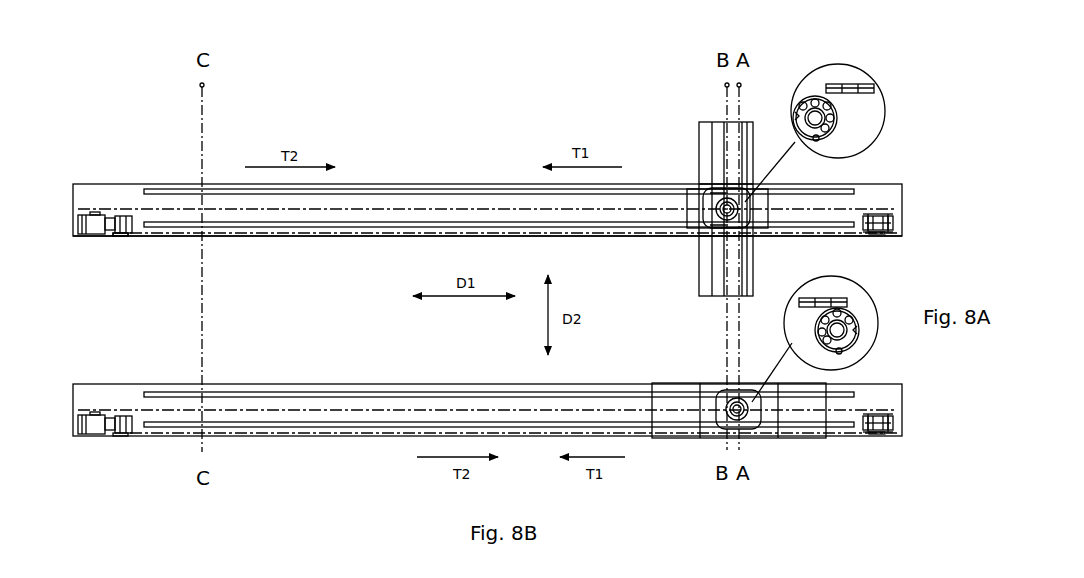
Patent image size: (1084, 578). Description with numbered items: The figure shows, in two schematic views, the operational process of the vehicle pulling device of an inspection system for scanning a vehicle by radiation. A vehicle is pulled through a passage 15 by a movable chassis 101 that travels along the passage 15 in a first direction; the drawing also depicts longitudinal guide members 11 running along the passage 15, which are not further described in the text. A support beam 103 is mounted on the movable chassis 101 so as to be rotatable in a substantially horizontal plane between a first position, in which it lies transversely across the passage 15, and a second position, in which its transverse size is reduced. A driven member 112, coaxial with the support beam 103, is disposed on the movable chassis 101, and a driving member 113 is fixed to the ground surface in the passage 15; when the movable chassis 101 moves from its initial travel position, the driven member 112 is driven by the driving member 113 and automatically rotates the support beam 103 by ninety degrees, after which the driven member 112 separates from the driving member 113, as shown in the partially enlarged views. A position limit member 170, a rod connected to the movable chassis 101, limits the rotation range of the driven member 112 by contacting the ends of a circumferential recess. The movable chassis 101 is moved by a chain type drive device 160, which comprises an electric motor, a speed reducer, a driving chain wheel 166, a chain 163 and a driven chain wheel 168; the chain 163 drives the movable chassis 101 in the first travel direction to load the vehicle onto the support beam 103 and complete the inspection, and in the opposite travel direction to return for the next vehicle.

In FIG. 8A, the guide rails 11 is at (345, 192).
In FIG. 8A, the passage 15 is at (449, 148).
In FIG. 8B, the passage 15 is at (367, 462).
In FIG. 8A, the movable chassis 101 is at (693, 197).
In FIG. 8A, the support beam 103 is at (714, 157).
In FIG. 8B, the support beam 103 is at (800, 420).
In FIG. 8A, the driven member 112 is at (828, 128).
In FIG. 8A, the driving member 113 is at (840, 86).
In FIG. 8A, the chain type drive device 160 is at (106, 188).
In FIG. 8B, the chain type drive device 160 is at (109, 403).
In FIG. 8A, the chain 163 is at (252, 233).
In FIG. 8A, the driving chain wheel 166 is at (120, 236).
In FIG. 8A, the driven chain wheel 168 is at (878, 235).
In FIG. 8A, the position limit member 170 is at (819, 140).